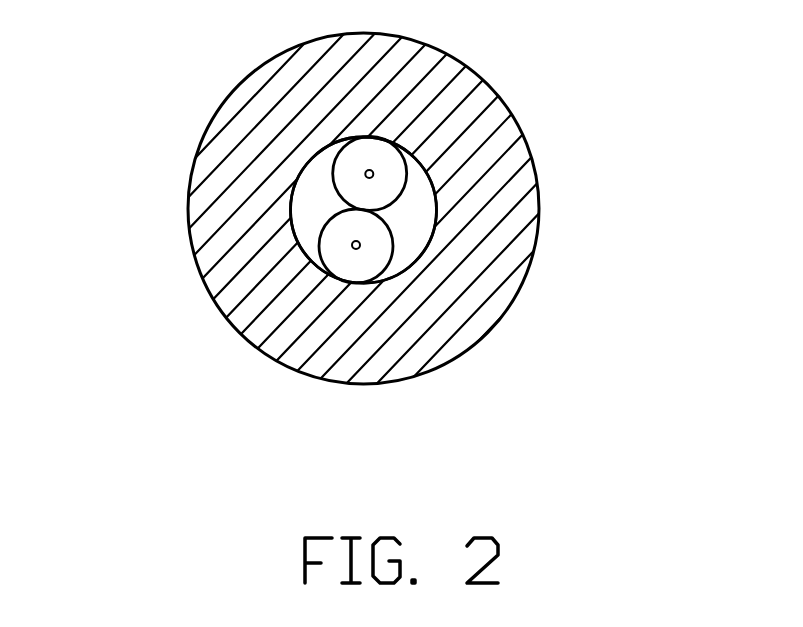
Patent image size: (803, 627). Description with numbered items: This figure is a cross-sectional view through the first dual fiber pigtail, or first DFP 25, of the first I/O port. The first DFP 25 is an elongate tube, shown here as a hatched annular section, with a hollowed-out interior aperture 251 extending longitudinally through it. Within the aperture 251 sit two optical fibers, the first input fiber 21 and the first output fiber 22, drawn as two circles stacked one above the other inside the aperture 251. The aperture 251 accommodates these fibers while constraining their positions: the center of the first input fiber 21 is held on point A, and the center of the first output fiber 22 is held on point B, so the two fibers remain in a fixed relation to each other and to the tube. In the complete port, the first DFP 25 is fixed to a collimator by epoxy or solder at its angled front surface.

The first DFP 25 is at (517, 97).
The interior aperture 251 is at (437, 216).
The first input fiber 21 is at (333, 170).
The first output fiber 22 is at (318, 248).
The point A is at (369, 174).
The point B is at (356, 245).